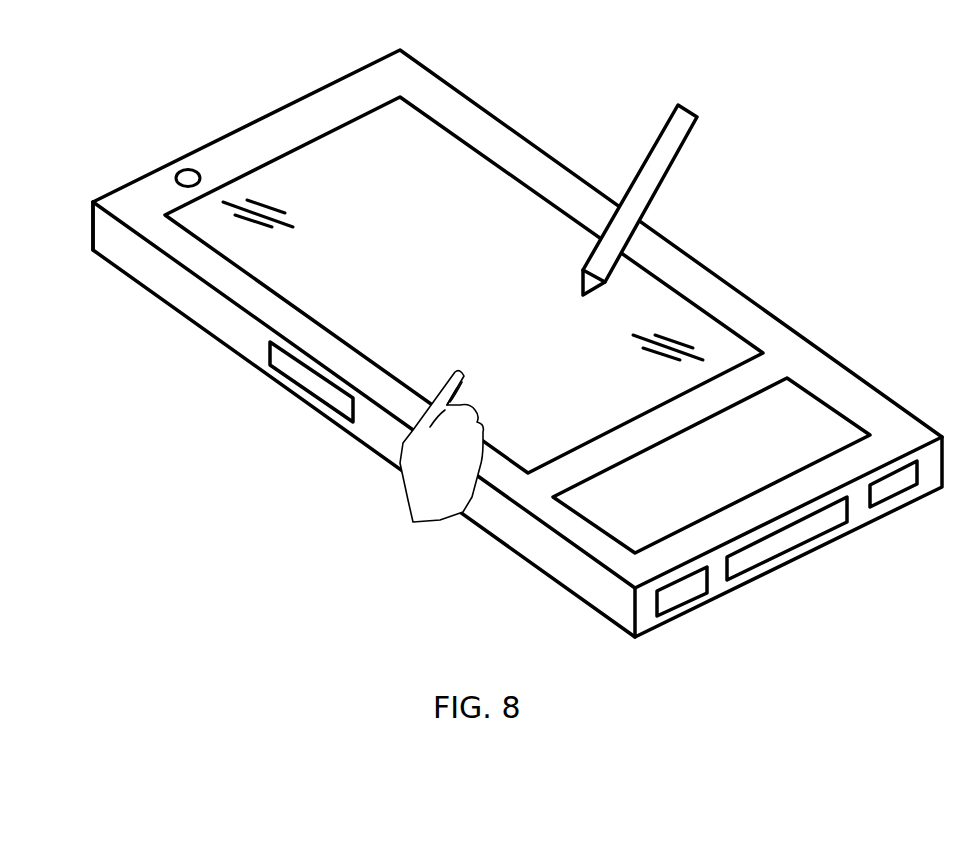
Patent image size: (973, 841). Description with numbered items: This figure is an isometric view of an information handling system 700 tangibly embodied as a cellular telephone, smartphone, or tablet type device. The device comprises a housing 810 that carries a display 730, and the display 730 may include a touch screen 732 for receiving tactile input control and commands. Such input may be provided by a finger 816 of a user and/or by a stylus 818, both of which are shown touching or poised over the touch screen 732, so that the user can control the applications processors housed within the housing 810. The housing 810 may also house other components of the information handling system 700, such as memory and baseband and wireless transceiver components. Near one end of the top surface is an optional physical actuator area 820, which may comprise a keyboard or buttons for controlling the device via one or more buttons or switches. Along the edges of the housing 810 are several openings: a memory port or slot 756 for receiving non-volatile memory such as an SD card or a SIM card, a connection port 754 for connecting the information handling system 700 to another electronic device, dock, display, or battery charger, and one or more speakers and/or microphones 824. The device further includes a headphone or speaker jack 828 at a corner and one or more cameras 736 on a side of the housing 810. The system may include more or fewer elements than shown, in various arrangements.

The information handling system 700 is at (529, 82).
The housing 810 is at (343, 77).
The display 730 is at (402, 159).
The touch screen 732 is at (493, 292).
The cameras 736 is at (182, 170).
The headphone or speaker jack 828 is at (110, 192).
The stylus 818 is at (660, 137).
The finger 816 is at (458, 373).
The physical actuator area 820 is at (800, 427).
The memory port or slot 756 is at (290, 380).
The connection port 754 is at (803, 545).
The speakers and/or microphones 824 is at (685, 602).